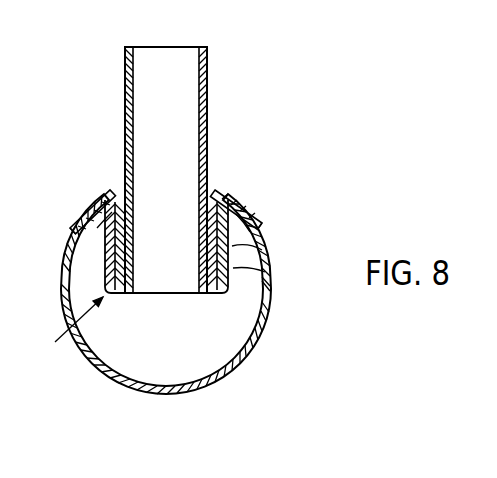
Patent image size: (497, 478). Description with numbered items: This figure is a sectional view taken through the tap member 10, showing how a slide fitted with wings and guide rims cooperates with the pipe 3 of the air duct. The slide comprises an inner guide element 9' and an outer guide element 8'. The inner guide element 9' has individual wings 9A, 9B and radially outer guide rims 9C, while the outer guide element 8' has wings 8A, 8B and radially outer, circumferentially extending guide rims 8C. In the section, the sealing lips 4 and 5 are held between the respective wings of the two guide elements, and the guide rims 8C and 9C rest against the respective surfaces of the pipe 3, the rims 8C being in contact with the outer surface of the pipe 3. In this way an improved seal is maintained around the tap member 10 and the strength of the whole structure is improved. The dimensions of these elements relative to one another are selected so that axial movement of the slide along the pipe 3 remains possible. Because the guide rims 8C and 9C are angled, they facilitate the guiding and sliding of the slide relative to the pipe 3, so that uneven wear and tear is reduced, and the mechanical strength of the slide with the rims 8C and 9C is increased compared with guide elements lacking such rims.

The tap member 10 is at (207, 110).
The pipe 3 is at (255, 350).
The wing of inner guide element 9B is at (108, 267).
The wing of outer guide element 8B is at (118, 195).
The wing of outer guide element 8A is at (213, 195).
The sealing lip 5 is at (103, 197).
The sealing lip 4 is at (226, 197).
The guide rims 8C is at (248, 202).
The guide rims 9C is at (255, 220).
The outer guide element 8' is at (270, 235).
The wing of inner guide element 9A is at (233, 268).
The inner guide element 9' is at (66, 327).